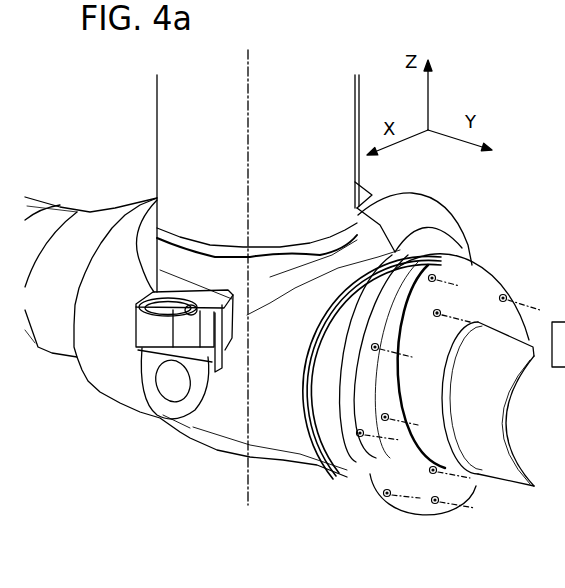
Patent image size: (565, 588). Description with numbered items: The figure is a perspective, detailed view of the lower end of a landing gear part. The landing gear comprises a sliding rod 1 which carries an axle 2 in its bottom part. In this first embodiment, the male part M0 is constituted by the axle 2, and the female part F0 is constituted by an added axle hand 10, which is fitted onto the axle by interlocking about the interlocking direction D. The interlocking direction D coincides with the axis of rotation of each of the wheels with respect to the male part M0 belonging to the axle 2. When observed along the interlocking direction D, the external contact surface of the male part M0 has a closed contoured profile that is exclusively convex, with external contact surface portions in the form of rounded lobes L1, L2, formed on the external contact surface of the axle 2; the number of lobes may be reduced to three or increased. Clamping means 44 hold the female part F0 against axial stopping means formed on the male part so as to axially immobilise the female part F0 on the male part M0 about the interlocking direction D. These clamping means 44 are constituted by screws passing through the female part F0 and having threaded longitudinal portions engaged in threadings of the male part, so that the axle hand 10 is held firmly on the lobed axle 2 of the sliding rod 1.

The sliding rod 1 is at (190, 98).
The axle 2 is at (450, 443).
The axle hand 10 is at (407, 512).
The clamping means 44 is at (440, 312).
The female part F0 is at (403, 288).
The male part M0 is at (443, 317).
The rounded lobe L1 is at (472, 438).
The rounded lobe L2 is at (405, 355).
The interlocking direction D is at (454, 496).